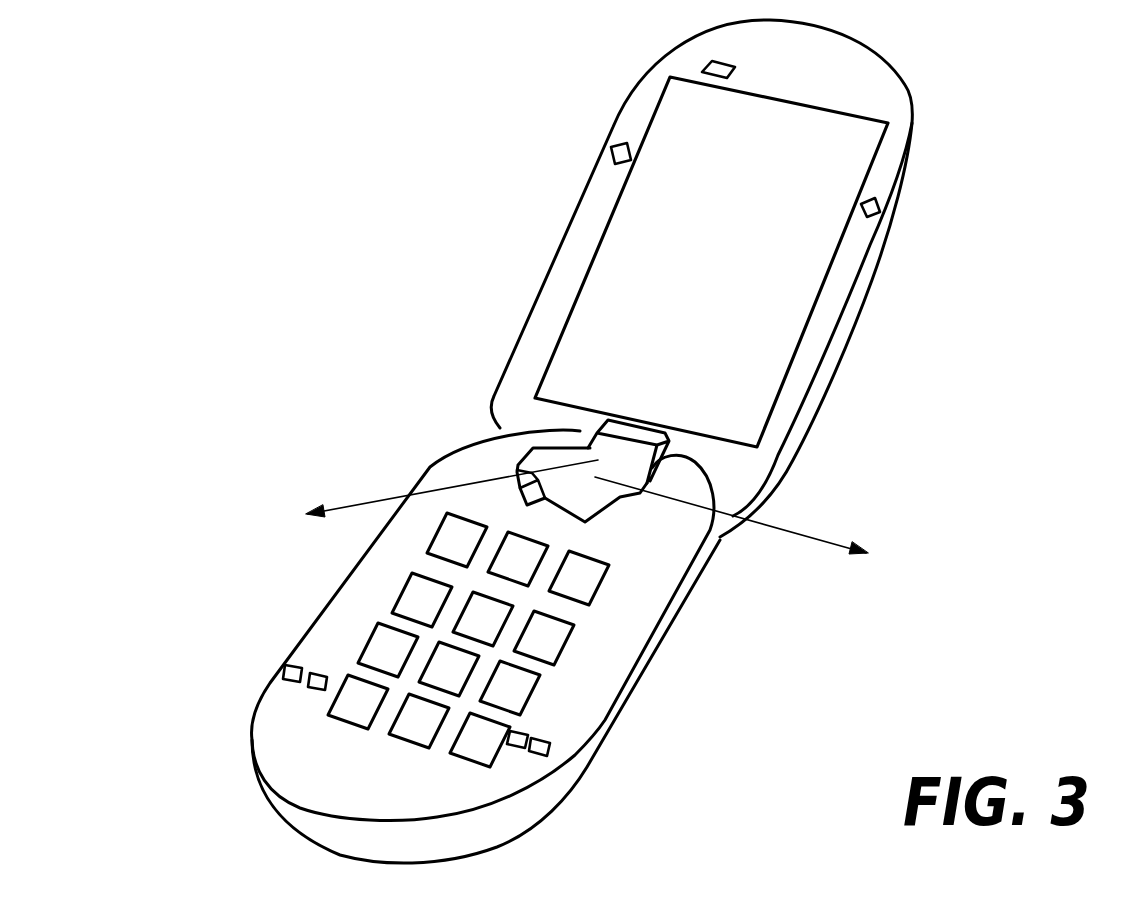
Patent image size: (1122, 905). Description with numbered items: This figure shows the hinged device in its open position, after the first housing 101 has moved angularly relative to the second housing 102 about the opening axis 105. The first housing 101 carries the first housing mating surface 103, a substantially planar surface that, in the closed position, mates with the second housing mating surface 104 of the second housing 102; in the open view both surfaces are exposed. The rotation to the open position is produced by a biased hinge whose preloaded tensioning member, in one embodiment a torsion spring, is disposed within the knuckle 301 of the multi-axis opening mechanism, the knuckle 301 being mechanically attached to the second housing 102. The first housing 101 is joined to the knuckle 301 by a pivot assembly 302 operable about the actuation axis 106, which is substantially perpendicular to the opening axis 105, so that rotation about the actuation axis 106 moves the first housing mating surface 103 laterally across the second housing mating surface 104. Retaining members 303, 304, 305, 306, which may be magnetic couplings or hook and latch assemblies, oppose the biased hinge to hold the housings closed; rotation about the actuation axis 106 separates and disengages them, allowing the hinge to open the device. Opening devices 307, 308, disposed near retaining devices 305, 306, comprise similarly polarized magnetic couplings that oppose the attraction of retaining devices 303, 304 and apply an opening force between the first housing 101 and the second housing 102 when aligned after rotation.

The first housing 101 is at (900, 202).
The second housing 102 is at (652, 632).
The first housing mating surface 103 is at (632, 118).
The second housing mating surface 104 is at (347, 755).
The opening axis 105 is at (783, 524).
The actuation axis 106 is at (370, 500).
The knuckle 301 is at (562, 454).
The pivot assembly 302 is at (579, 440).
The retaining member 303 is at (880, 207).
The retaining member 304 is at (610, 152).
The retaining member 305 is at (537, 758).
The retaining member 306 is at (285, 678).
The opening device 307 is at (530, 732).
The opening device 308 is at (318, 672).